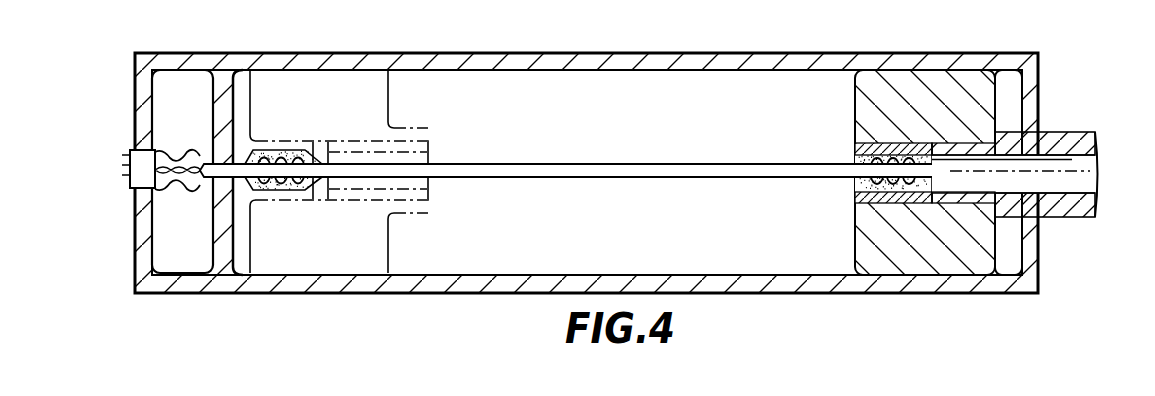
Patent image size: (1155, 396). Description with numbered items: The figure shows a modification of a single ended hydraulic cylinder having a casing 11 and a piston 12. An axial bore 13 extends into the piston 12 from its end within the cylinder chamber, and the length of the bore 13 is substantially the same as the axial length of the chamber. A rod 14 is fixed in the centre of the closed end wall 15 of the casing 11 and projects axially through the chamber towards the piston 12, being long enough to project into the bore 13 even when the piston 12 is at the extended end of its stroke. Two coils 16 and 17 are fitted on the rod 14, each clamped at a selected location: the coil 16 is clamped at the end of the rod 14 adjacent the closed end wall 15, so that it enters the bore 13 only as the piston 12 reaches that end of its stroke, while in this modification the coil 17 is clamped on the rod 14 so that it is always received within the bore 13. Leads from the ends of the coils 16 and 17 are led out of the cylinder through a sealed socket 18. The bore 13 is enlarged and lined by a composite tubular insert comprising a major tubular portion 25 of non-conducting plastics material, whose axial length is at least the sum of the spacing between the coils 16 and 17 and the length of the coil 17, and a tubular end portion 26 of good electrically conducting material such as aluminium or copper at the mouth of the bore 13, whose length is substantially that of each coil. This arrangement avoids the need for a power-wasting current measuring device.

The cylinder casing 11 is at (458, 283).
The piston 12 is at (942, 262).
The axial bore 13 is at (1085, 182).
The rod 14 is at (570, 172).
The closed end wall 15 is at (225, 145).
The coil 16 is at (285, 155).
The coil 17 is at (888, 155).
The sealed socket 18 is at (143, 180).
The major tubular portion 25 is at (1053, 200).
The tubular end portion 26 is at (882, 200).